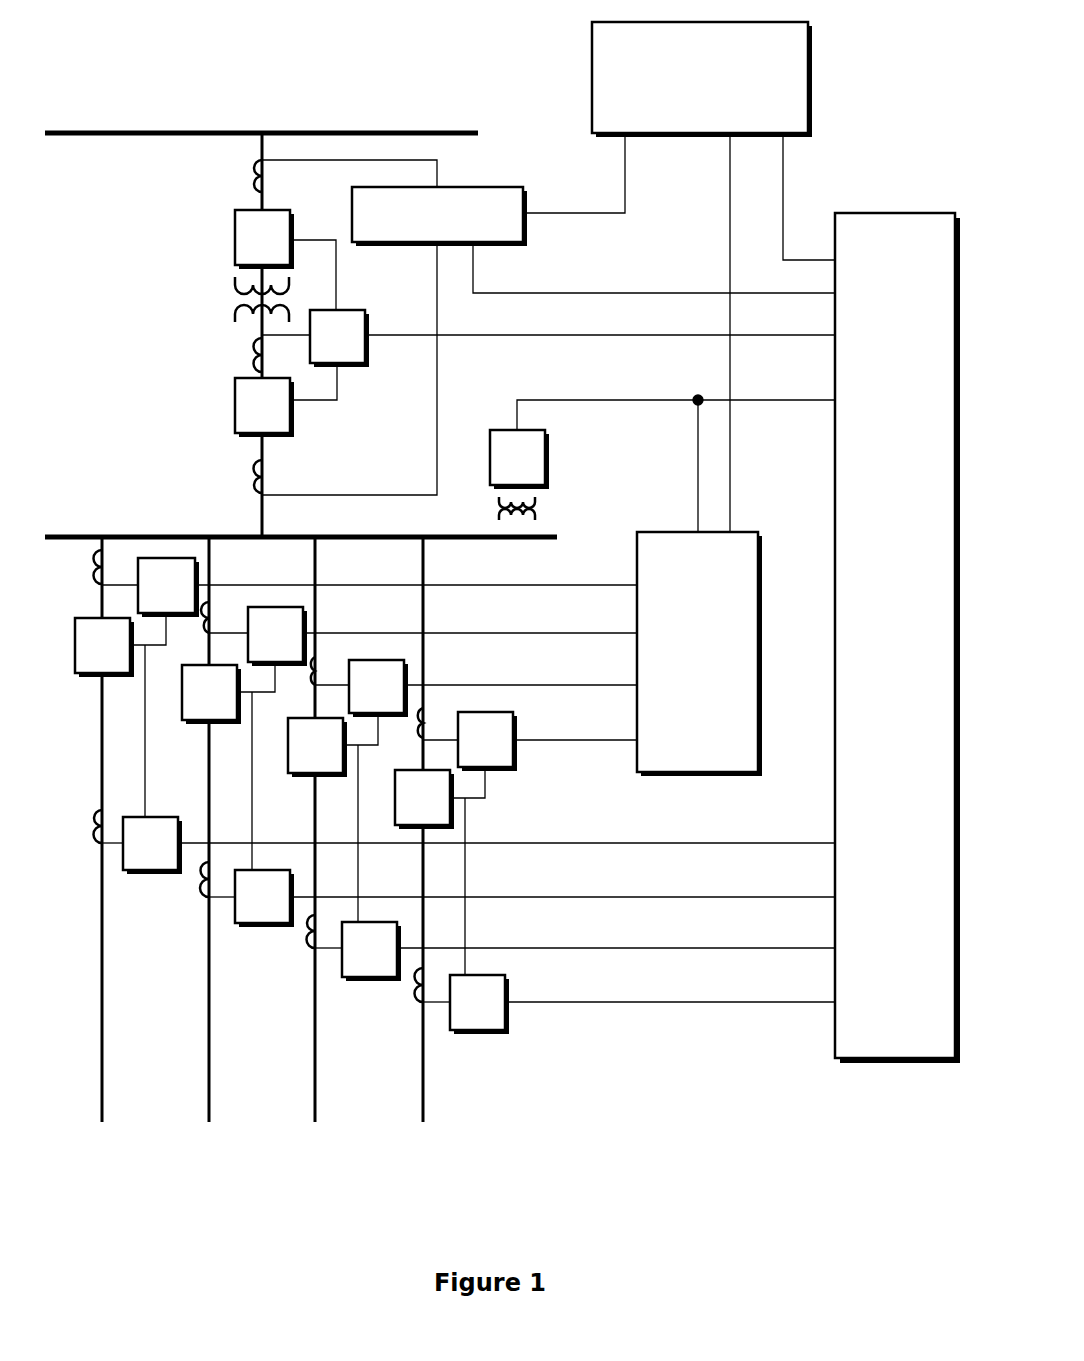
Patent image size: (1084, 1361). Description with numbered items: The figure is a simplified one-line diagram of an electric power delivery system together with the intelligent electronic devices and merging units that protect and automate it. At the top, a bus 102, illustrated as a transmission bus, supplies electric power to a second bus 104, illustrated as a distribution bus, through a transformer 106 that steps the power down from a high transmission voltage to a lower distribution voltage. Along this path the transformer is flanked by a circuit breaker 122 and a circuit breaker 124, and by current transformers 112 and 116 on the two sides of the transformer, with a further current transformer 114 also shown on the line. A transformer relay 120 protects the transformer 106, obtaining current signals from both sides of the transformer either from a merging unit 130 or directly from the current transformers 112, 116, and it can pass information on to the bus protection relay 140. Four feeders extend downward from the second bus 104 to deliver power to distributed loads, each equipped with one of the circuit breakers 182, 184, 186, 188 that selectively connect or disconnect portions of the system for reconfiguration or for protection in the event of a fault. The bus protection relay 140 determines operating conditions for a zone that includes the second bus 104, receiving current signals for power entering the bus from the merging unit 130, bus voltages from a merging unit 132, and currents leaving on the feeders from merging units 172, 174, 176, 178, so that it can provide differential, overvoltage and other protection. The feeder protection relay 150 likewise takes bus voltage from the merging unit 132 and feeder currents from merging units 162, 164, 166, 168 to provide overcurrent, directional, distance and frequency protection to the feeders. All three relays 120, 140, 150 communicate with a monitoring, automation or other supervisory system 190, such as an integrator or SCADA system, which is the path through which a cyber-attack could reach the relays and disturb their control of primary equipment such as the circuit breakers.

The bus 102 is at (122, 138).
The second bus 104 is at (78, 533).
The transformer 106 is at (234, 294).
The current transformer 112 is at (254, 187).
The current transformer 114 is at (254, 365).
The current transformer 116 is at (254, 467).
The transformer relay 120 is at (452, 180).
The circuit breaker 122 is at (234, 237).
The circuit breaker 124 is at (234, 408).
The merging unit 130 is at (370, 325).
The merging unit 132 is at (550, 450).
The bus protection relay 140 is at (880, 1064).
The feeder protection relay 150 is at (700, 778).
The merging unit 162 is at (200, 573).
The merging unit 164 is at (308, 620).
The merging unit 166 is at (410, 676).
The merging unit 168 is at (518, 720).
The merging unit 172 is at (150, 876).
The merging unit 174 is at (262, 929).
The merging unit 176 is at (372, 983).
The merging unit 178 is at (485, 1036).
The circuit breaker 182 is at (88, 680).
The circuit breaker 184 is at (196, 726).
The circuit breaker 186 is at (302, 779).
The circuit breaker 188 is at (455, 815).
The supervisory system 190 is at (812, 36).